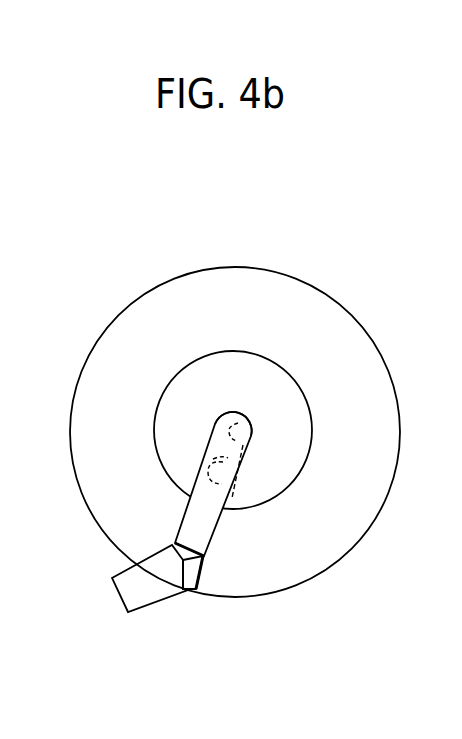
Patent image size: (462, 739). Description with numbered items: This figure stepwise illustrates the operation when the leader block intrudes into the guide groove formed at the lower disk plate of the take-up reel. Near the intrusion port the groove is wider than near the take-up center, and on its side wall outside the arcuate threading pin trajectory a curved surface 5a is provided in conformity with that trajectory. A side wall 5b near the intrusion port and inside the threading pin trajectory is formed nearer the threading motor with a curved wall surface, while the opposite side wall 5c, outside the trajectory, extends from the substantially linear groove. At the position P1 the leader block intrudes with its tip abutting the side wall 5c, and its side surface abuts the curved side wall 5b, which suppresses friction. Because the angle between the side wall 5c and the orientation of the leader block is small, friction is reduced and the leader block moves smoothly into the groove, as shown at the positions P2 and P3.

The curved surface 5a is at (247, 473).
The side wall 5b is at (145, 546).
The side wall 5c is at (186, 594).
The position P1 is at (148, 600).
The position P2 is at (178, 531).
The position P3 is at (210, 435).